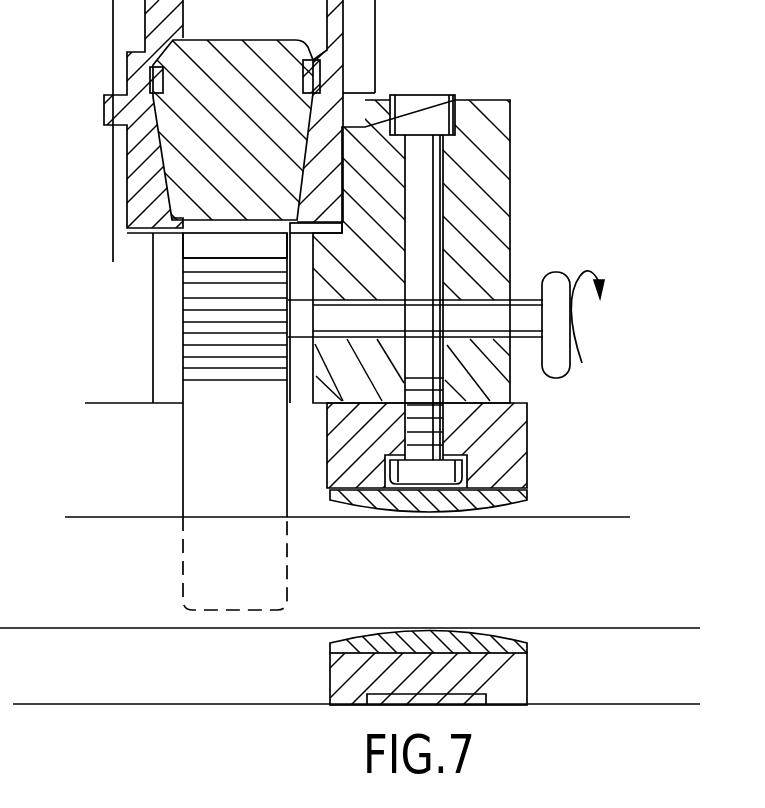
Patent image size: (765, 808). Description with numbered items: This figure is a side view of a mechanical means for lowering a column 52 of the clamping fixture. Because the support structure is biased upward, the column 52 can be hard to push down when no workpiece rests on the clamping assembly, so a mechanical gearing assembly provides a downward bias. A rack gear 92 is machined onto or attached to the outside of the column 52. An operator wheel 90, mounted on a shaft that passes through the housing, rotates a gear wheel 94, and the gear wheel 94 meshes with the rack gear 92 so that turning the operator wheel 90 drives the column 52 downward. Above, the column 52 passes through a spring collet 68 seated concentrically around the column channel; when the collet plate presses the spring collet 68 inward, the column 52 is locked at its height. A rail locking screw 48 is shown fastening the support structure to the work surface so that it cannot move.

The spring collet 68 is at (282, 62).
The rail locking screw 48 is at (432, 175).
The operator wheel 90 is at (553, 268).
The column 52 is at (193, 462).
The rack gear 92 is at (182, 275).
The gear wheel 94 is at (197, 303).